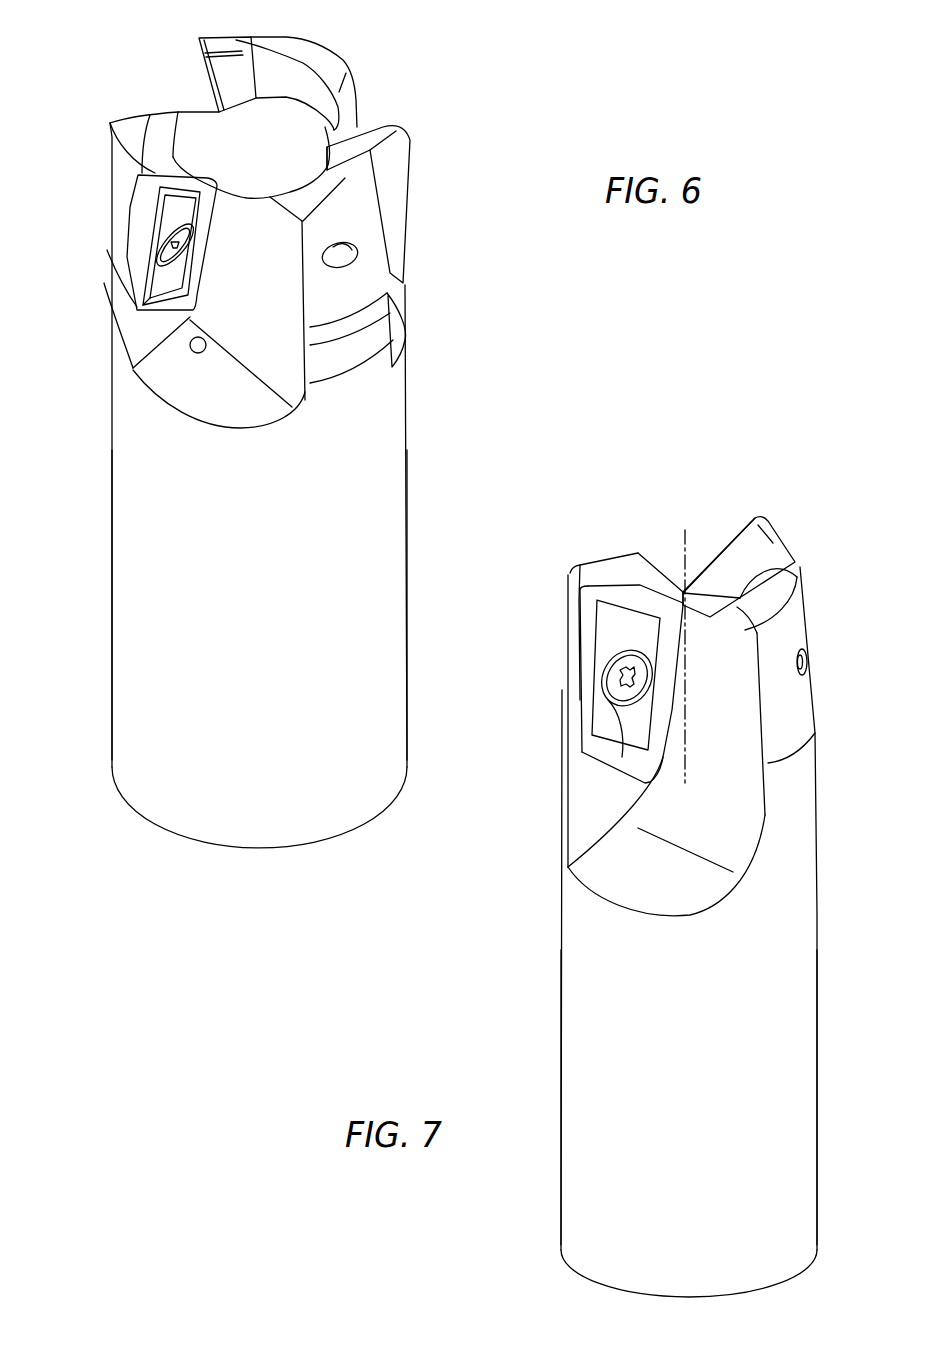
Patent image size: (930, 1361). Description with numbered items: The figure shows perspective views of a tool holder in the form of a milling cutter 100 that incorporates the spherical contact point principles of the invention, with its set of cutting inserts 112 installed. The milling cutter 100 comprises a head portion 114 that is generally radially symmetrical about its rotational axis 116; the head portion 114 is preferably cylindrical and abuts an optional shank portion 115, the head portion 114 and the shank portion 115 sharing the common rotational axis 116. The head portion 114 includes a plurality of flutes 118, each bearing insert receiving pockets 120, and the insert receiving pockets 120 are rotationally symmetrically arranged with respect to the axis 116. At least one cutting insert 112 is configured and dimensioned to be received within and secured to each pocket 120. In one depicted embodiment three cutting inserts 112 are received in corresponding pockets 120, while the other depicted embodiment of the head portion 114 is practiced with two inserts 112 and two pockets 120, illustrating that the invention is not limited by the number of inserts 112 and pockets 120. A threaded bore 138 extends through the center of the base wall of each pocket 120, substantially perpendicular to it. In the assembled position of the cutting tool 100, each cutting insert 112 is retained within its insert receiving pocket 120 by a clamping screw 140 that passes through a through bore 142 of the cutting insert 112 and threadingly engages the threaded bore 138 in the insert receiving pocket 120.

In FIG. 6, the milling cutter 100 is at (456, 312).
In FIG. 7, the milling cutter 100 is at (500, 938).
In FIG. 6, the cutting insert 112 is at (405, 188).
In FIG. 7, the cutting insert 112 is at (728, 550).
In FIG. 6, the head portion 114 is at (420, 128).
In FIG. 7, the head portion 114 is at (800, 553).
In FIG. 6, the shank portion 115 is at (407, 452).
In FIG. 7, the shank portion 115 is at (818, 947).
In FIG. 6, the rotational axis 116 is at (258, 152).
In FIG. 7, the rotational axis 116 is at (683, 590).
In FIG. 6, the flute 118 is at (216, 399).
In FIG. 7, the flute 118 is at (657, 889).
In FIG. 6, the insert receiving pocket 120 is at (397, 236).
In FIG. 7, the insert receiving pocket 120 is at (813, 601).
In FIG. 6, the threaded bore 138 is at (340, 263).
In FIG. 7, the threaded bore 138 is at (808, 663).
In FIG. 6, the clamping screw 140 is at (165, 262).
In FIG. 7, the clamping screw 140 is at (607, 697).
In FIG. 6, the through bore 142 is at (180, 283).
In FIG. 7, the through bore 142 is at (618, 722).